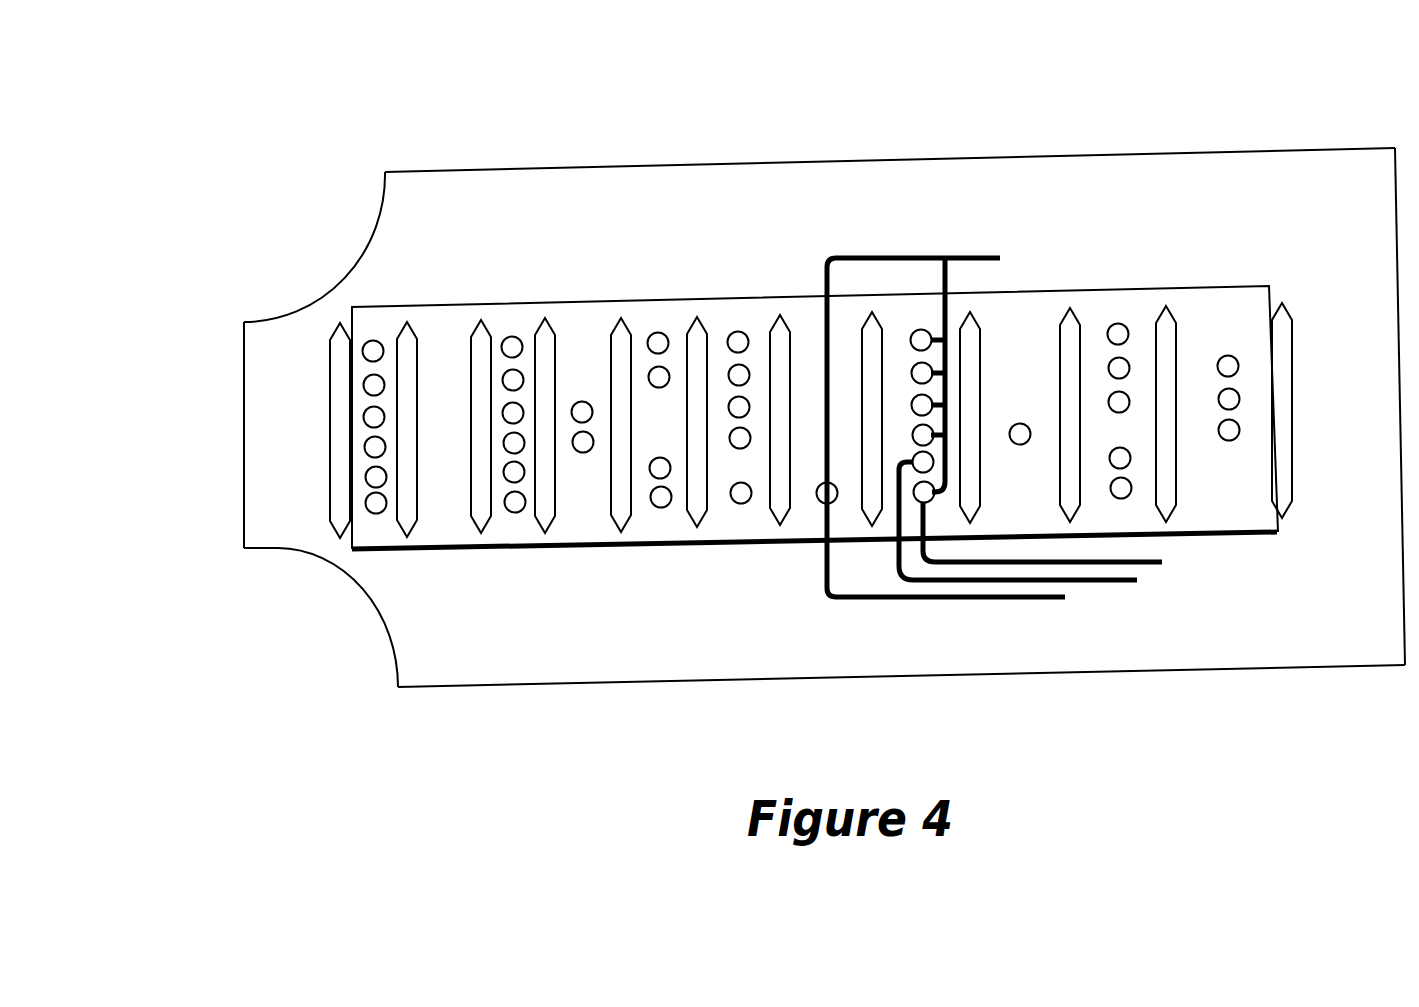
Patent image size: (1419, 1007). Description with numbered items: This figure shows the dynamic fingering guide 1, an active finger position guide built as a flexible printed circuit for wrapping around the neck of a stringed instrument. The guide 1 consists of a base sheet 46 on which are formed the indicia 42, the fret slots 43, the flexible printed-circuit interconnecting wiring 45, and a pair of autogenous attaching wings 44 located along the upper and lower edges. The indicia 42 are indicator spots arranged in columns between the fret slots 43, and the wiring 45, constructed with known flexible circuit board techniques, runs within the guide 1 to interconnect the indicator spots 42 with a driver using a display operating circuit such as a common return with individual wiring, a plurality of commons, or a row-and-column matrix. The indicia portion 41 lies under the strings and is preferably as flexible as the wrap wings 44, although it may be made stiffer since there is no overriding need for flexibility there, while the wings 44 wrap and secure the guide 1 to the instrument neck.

The fingering guide 1 is at (314, 184).
The indicia portion 41 is at (613, 298).
The indicia 42 is at (1122, 322).
The fret slots 43 is at (787, 312).
The attaching wings 44 is at (455, 170).
The interconnecting wiring 45 is at (985, 603).
The base sheet 46 is at (222, 460).